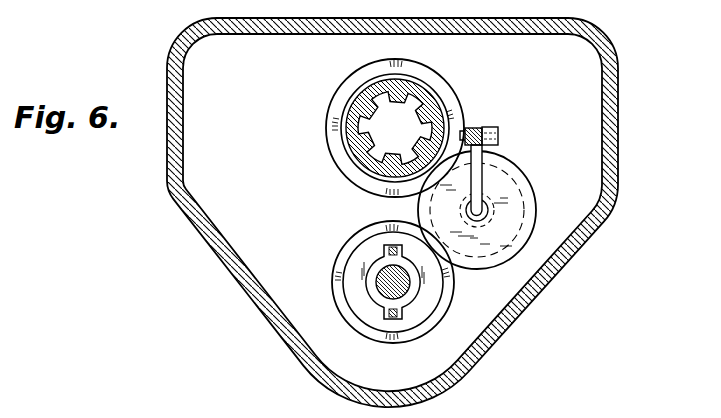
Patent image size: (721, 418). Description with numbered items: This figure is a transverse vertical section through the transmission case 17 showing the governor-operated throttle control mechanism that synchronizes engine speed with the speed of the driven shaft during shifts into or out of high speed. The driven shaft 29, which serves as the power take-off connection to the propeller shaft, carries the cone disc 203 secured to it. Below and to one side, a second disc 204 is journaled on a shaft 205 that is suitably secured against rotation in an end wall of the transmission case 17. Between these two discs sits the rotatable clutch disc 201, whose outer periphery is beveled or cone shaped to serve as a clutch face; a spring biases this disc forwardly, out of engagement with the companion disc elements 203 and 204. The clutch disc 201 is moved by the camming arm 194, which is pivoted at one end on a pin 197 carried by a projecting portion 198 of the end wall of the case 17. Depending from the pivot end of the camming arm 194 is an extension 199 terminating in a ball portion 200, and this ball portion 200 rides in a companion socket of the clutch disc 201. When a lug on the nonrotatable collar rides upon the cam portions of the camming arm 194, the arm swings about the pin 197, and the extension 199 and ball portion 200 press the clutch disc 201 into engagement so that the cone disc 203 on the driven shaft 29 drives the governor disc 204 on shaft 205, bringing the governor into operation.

The transmission case 17 is at (619, 118).
The cone disc 203 is at (333, 106).
The driven shaft 29 is at (378, 150).
The pin 197 is at (466, 130).
The camming arm 194 is at (480, 128).
The projecting portion 198 is at (499, 135).
The extension 199 is at (478, 176).
The ball portion 200 is at (483, 209).
The rotatable clutch disc 201 is at (534, 222).
The disc 204 is at (352, 247).
The shaft 205 is at (388, 284).